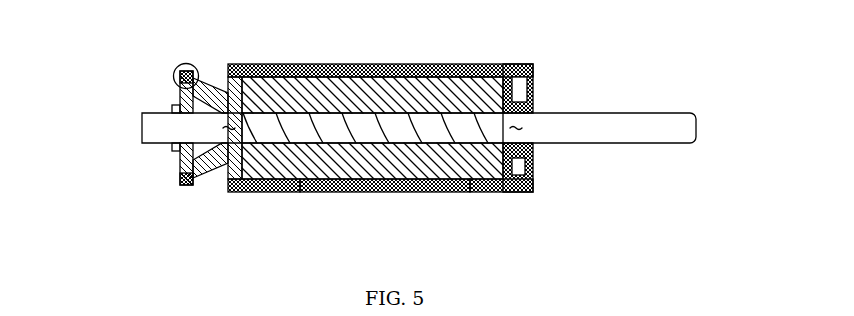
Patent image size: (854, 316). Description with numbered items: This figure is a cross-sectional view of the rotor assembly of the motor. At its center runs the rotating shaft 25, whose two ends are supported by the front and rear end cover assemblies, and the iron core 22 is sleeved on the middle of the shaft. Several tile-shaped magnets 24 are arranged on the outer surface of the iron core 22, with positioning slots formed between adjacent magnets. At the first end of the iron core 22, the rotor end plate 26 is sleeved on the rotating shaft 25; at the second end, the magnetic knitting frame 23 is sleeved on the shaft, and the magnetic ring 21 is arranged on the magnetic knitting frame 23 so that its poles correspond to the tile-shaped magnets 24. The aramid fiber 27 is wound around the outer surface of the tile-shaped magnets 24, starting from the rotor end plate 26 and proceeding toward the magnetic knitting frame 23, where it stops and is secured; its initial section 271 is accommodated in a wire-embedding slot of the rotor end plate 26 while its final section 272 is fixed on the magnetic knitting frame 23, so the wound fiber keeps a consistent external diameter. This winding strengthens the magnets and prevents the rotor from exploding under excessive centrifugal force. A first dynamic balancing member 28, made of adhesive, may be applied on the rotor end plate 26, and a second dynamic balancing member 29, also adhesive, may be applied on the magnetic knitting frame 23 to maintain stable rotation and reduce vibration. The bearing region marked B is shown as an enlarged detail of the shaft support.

The bearing detail B is at (170, 67).
The magnetic ring 21 is at (183, 185).
The iron core 22 is at (366, 96).
The magnetic knitting frame 23 is at (207, 108).
The tile-shaped magnets 24 is at (282, 67).
The rotating shaft 25 is at (466, 126).
The rotor end plate 26 is at (525, 70).
The aramid fiber 27 is at (367, 194).
The first dynamic balancing member 28 is at (525, 166).
The second dynamic balancing member 29 is at (187, 167).
The initial section of the aramid fiber 271 is at (501, 196).
The final section of the aramid fiber 272 is at (240, 196).